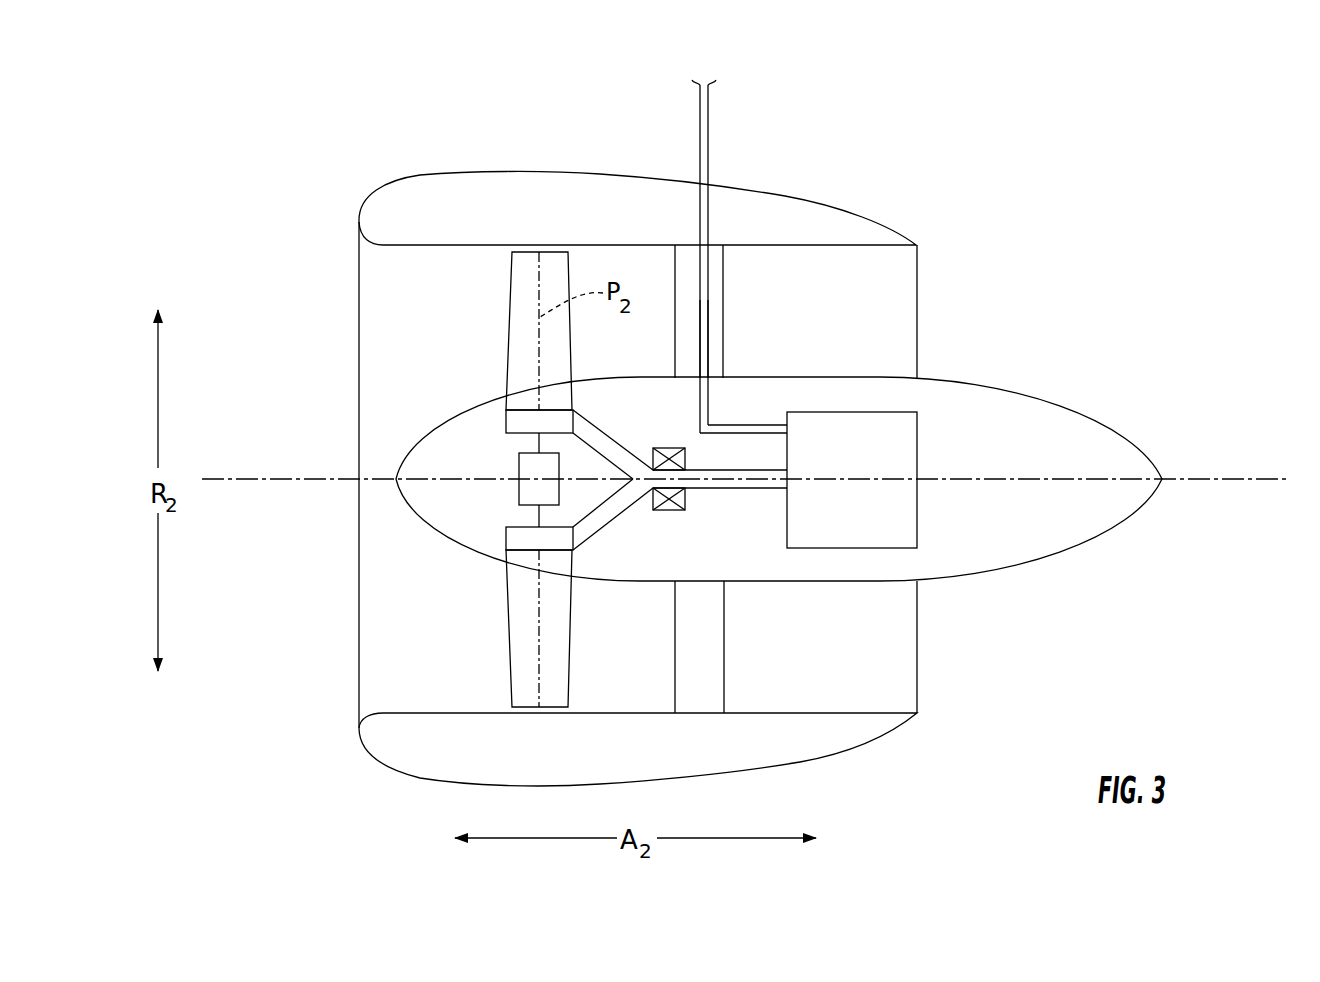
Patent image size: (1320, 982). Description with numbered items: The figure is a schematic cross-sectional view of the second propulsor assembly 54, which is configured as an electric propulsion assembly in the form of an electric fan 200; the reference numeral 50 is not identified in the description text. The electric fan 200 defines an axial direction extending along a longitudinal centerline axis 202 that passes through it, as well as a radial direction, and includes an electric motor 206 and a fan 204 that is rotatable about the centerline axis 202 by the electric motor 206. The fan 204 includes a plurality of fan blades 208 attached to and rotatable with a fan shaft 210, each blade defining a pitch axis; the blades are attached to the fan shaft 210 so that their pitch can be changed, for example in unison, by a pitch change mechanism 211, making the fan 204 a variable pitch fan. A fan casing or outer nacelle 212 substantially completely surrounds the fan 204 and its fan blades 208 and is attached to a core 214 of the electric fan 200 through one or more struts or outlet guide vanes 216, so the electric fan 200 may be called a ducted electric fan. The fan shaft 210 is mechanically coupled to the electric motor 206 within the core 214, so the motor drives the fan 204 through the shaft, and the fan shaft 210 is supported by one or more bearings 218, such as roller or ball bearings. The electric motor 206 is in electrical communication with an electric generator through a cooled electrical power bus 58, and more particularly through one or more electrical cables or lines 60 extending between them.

The propulsion system 50 is at (746, 421).
The second propulsor assembly 54 is at (628, 146).
The electrical power bus 58 is at (755, 131).
The electrical cables or lines 60 is at (708, 340).
The electric fan 200 is at (492, 382).
The longitudinal centerline axis 202 is at (1205, 474).
The fan 204 is at (406, 322).
The electric motor 206 is at (918, 465).
The fan blades 208 is at (506, 383).
The fan shaft 210 is at (698, 492).
The pitch change mechanism 211 is at (518, 493).
The outer nacelle 212 is at (786, 196).
The core 214 is at (1007, 387).
The struts or outlet guide vanes 216 is at (724, 677).
The bearings 218 is at (668, 448).